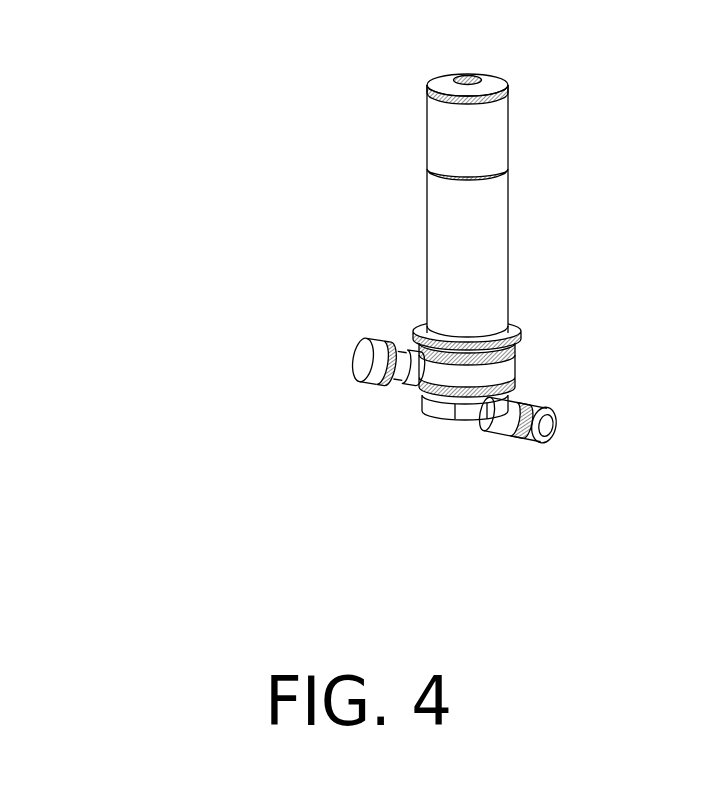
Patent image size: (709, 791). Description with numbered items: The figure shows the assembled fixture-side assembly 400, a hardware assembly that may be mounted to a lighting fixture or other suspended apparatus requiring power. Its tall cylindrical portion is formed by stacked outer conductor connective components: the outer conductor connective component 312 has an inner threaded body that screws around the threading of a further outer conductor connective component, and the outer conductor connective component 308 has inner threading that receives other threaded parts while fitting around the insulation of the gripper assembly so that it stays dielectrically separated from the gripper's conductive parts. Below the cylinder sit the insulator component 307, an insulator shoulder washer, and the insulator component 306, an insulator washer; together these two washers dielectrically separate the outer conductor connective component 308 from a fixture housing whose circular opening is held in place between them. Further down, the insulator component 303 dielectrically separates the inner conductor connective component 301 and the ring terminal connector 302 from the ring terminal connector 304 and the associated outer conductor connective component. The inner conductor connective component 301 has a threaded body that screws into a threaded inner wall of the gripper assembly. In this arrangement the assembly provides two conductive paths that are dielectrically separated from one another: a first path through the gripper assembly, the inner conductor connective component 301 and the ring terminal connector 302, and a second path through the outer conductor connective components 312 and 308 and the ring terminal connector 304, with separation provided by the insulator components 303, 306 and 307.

The fixture-side assembly 400 is at (323, 183).
The outer conductor connective component 312 is at (510, 118).
The outer conductor connective component 308 is at (510, 245).
The insulator component 307 is at (525, 327).
The insulator component 306 is at (523, 363).
The insulator component 303 is at (518, 390).
The inner conductor connective component 301 is at (420, 413).
The ring terminal connector 304 is at (357, 350).
The ring terminal connector 302 is at (560, 433).